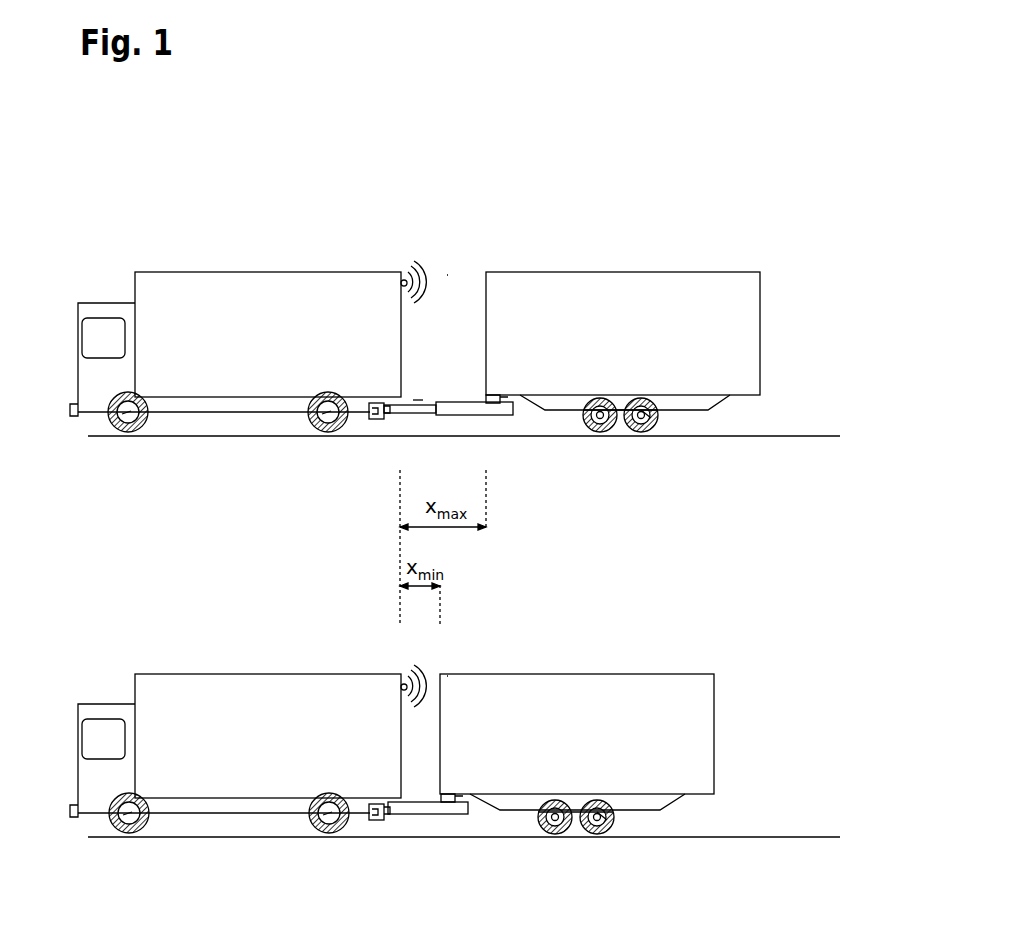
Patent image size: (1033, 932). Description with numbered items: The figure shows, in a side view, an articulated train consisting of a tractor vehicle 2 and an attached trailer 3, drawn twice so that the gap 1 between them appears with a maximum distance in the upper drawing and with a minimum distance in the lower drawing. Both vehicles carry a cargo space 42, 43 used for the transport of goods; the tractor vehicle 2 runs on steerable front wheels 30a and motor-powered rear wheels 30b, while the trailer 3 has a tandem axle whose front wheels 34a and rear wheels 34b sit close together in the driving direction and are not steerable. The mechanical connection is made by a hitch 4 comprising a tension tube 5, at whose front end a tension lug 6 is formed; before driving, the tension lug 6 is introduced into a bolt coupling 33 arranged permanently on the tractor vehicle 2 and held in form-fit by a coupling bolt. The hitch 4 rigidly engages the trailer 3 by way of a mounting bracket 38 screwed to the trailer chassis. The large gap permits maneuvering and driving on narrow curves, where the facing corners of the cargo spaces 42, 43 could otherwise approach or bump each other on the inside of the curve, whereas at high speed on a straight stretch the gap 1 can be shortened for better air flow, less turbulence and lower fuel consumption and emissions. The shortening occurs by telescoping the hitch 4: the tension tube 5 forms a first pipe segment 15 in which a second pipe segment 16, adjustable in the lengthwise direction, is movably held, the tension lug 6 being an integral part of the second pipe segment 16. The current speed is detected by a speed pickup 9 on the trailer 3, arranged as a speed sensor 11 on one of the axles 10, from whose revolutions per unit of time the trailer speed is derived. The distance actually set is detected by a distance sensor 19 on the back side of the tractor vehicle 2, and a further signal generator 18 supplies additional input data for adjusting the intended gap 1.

The gap 1 is at (452, 280).
The tractor vehicle 2 is at (177, 320).
The trailer 3 is at (733, 314).
The hitch 4 is at (475, 423).
The tension tube 5 is at (472, 362).
The tension lug 6 is at (378, 421).
The speed pickup 9 is at (663, 585).
The axle 10 is at (642, 400).
The speed sensor 11 is at (657, 402).
The first pipe segment 15 is at (462, 402).
The second pipe segment 16 is at (418, 400).
The signal generator 18 is at (350, 447).
The distance sensor 19 is at (399, 280).
The front wheels 30a is at (104, 437).
The rear wheels 30b is at (298, 437).
The bolt coupling 33 is at (375, 403).
The front wheels 34a is at (606, 436).
The rear wheels 34b is at (660, 418).
The mounting bracket 38 is at (497, 396).
The cargo space 42 is at (237, 295).
The cargo space 43 is at (600, 297).